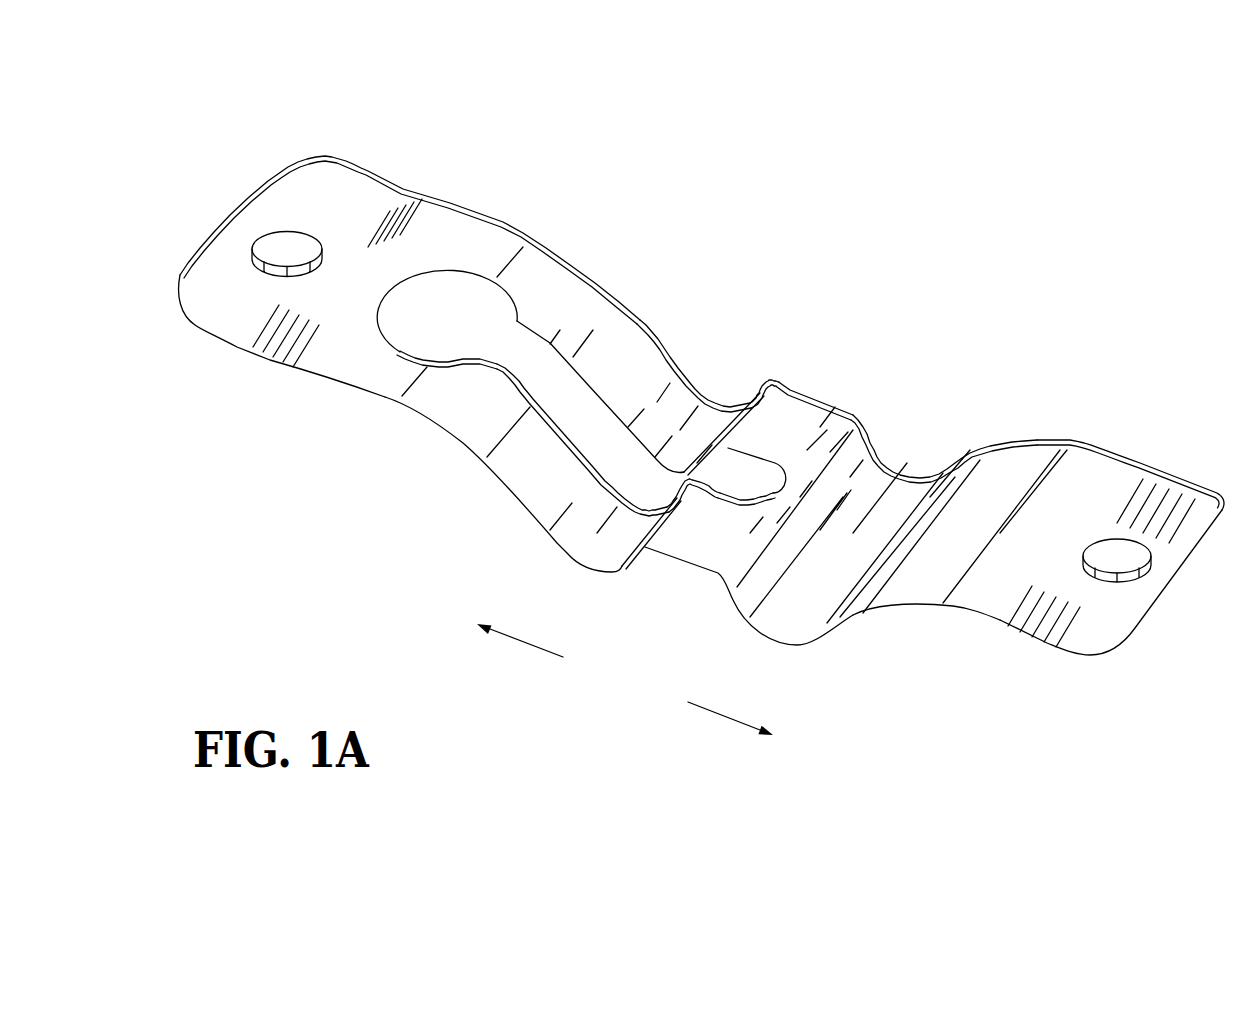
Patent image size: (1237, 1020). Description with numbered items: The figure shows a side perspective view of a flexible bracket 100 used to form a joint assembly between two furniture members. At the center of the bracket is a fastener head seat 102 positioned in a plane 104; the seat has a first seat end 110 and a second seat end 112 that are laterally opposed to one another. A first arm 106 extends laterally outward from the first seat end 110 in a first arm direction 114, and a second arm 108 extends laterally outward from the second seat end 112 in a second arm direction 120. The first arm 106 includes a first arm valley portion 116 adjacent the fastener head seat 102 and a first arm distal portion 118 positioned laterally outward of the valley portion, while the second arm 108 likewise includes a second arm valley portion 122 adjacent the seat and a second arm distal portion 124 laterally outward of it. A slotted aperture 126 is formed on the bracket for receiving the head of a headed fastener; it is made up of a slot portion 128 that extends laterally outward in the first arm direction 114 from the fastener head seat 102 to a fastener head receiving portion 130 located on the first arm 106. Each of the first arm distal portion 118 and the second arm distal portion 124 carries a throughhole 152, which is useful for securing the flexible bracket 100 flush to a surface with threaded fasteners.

The flexible bracket 100 is at (968, 132).
The fastener head seat 102 is at (828, 438).
The plane 104 is at (690, 537).
The first arm 106 is at (487, 238).
The second arm 108 is at (1180, 500).
The first seat end 110 is at (800, 417).
The second seat end 112 is at (803, 417).
The first arm direction 114 is at (531, 650).
The first arm valley portion 116 is at (713, 425).
The first arm distal portion 118 is at (430, 400).
The second arm direction 120 is at (730, 718).
The second arm valley portion 122 is at (900, 487).
The second arm distal portion 124 is at (990, 607).
The slotted aperture 126 is at (553, 342).
The slot portion 128 is at (657, 494).
The fastener head receiving portion 130 is at (445, 290).
The throughhole 152 is at (283, 248).